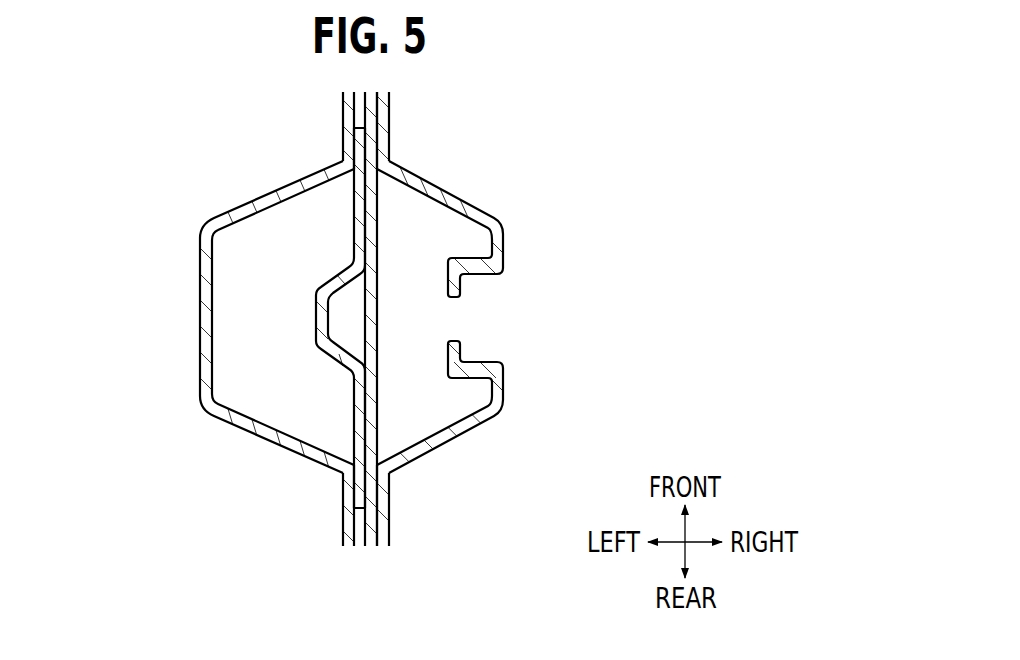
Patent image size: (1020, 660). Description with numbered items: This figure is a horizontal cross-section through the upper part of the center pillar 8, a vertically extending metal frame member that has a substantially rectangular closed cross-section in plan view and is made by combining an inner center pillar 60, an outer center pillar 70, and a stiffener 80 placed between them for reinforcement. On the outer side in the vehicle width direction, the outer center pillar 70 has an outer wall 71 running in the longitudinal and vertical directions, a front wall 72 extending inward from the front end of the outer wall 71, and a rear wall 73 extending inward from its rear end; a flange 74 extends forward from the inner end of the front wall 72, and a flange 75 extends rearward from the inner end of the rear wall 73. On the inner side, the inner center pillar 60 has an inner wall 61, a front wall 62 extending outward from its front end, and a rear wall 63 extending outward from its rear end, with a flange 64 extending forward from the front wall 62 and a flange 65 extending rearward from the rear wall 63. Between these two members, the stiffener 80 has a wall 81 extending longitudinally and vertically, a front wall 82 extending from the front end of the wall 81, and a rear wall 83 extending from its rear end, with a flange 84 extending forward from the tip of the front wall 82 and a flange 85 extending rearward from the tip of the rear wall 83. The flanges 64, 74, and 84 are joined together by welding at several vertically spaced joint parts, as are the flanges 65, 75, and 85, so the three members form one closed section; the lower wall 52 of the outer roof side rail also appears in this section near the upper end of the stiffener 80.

The center pillar 8 is at (152, 130).
The outer center pillar 70 is at (118, 339).
The outer wall 71 is at (200, 308).
The front wall 72 is at (282, 187).
The rear wall 73 is at (268, 441).
The flange 74 is at (343, 122).
The flange 75 is at (343, 518).
The inner center pillar 60 is at (637, 331).
The inner wall 61 is at (505, 252).
The front wall 62 is at (462, 200).
The rear wall 63 is at (466, 431).
The flange 64 is at (390, 122).
The flange 65 is at (390, 518).
The stiffener 80 is at (296, 290).
The wall 81 is at (316, 322).
The front wall 82 is at (333, 276).
The rear wall 83 is at (341, 370).
The flange 84 is at (366, 138).
The flange 85 is at (357, 504).
The lower wall 52 is at (378, 315).